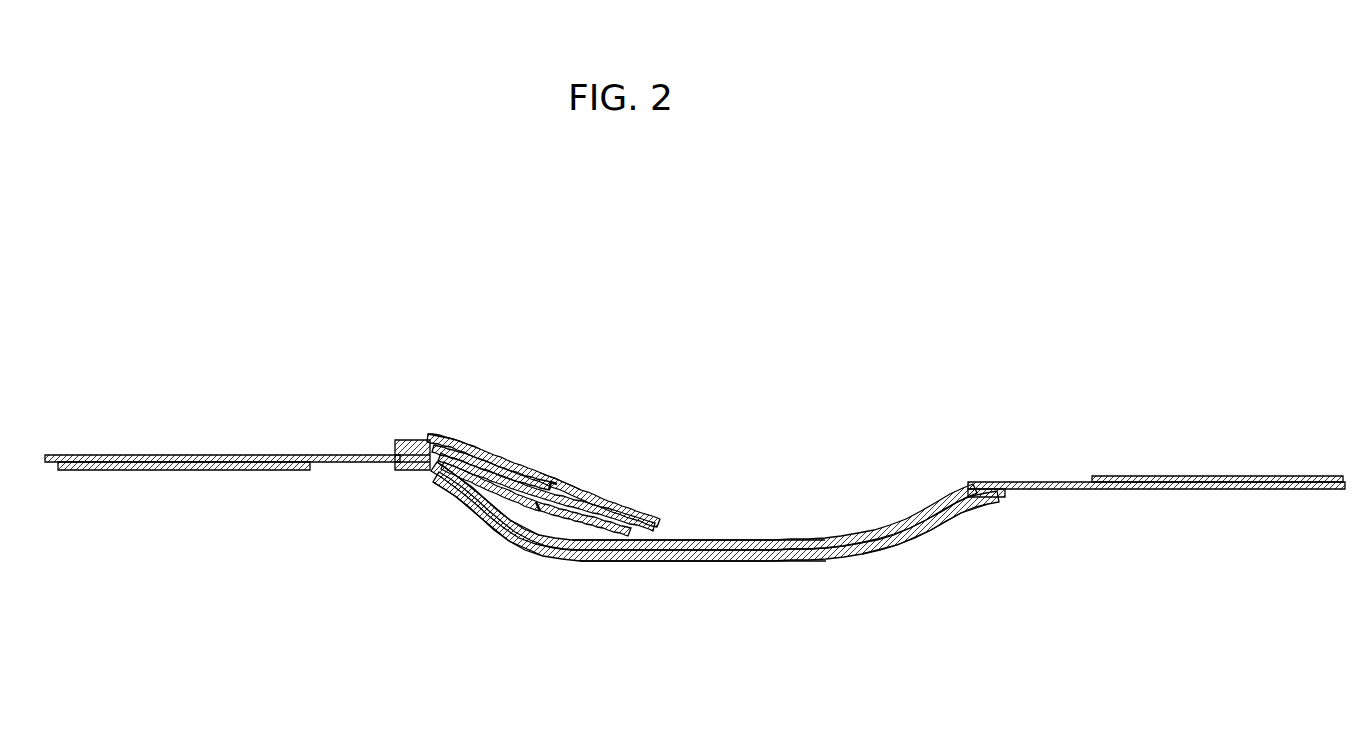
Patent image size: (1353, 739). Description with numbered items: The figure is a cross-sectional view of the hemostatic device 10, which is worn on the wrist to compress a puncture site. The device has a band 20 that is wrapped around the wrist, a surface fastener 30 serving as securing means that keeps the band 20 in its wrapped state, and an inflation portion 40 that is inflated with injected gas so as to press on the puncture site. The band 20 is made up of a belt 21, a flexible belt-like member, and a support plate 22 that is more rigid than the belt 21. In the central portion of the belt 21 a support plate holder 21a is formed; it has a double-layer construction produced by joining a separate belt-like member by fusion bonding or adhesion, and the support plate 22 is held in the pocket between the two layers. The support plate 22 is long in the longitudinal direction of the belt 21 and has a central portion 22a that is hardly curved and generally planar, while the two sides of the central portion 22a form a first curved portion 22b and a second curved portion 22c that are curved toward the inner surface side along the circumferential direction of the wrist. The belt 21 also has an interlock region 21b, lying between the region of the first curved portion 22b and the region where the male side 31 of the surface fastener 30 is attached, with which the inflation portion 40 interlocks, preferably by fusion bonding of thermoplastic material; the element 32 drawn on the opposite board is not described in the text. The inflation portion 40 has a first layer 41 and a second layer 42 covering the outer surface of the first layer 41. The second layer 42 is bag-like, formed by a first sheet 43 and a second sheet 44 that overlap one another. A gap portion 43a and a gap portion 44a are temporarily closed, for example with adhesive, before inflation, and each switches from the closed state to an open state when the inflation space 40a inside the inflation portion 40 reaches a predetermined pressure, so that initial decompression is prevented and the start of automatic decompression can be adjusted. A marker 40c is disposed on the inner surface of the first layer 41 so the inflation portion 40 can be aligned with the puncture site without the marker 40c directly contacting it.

The hemostatic device 10 is at (157, 241).
The band 20 is at (985, 388).
The belt 21 is at (988, 490).
The support plate holder 21a is at (627, 558).
The interlock region 21b is at (424, 475).
The support plate 22 is at (890, 535).
The central portion 22a is at (726, 552).
The first curved portion 22b is at (490, 525).
The second curved portion 22c is at (935, 528).
The surface fastener 30 is at (155, 478).
The male side 31 is at (210, 470).
The connection pad of right board 32 is at (1190, 477).
The inflation portion 40 is at (615, 487).
The inflation space 40a is at (484, 447).
The marker 40c is at (552, 478).
The first layer 41 is at (508, 450).
The second layer 42 is at (800, 450).
The first sheet 43 is at (662, 532).
The gap portion 43a is at (541, 506).
The second sheet 44 is at (660, 506).
The gap portion 44a is at (542, 483).